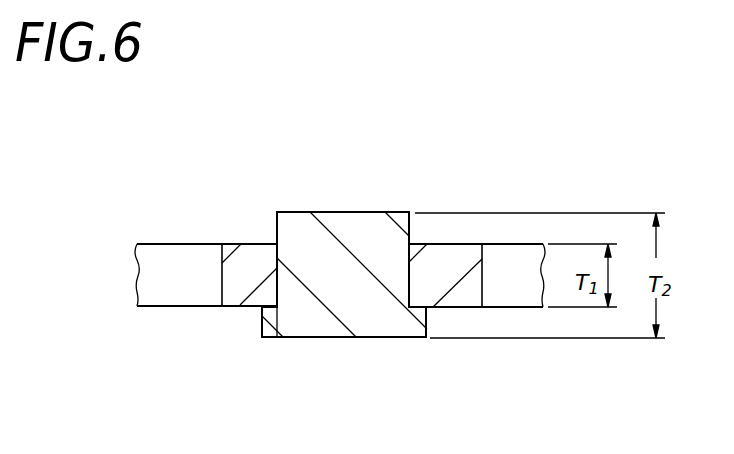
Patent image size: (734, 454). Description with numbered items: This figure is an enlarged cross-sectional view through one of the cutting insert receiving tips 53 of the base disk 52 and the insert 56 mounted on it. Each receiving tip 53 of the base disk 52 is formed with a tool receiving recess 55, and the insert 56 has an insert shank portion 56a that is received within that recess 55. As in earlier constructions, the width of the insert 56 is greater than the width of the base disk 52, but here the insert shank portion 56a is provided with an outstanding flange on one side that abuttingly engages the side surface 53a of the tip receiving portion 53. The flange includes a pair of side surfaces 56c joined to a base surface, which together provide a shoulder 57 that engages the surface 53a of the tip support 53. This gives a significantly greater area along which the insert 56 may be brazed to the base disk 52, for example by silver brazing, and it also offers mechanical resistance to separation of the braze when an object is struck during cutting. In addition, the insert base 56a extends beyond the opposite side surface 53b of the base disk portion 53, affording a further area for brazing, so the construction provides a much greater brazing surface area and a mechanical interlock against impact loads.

The base disk 52 is at (173, 244).
The cutting insert receiving tip 53 is at (247, 255).
The side surface of tip receiving portion 53a is at (460, 307).
The opposite side surface of base disk portion 53b is at (470, 244).
The tool receiving recess 55 is at (277, 251).
The insert 56 is at (342, 212).
The insert shank portion 56a is at (375, 235).
The side surfaces of flange 56c is at (258, 337).
The shoulder 57 is at (262, 309).